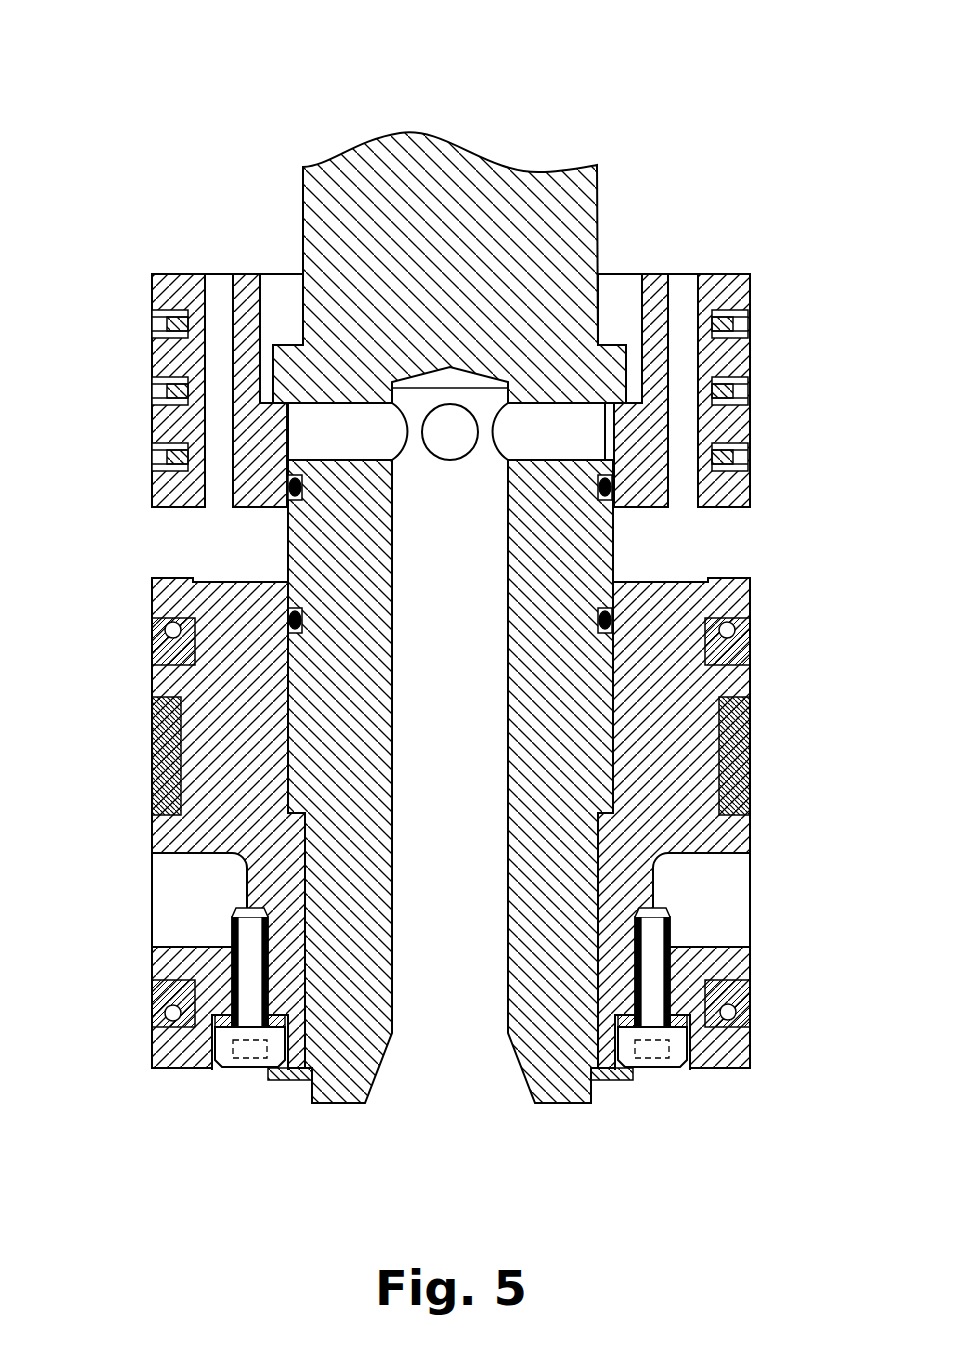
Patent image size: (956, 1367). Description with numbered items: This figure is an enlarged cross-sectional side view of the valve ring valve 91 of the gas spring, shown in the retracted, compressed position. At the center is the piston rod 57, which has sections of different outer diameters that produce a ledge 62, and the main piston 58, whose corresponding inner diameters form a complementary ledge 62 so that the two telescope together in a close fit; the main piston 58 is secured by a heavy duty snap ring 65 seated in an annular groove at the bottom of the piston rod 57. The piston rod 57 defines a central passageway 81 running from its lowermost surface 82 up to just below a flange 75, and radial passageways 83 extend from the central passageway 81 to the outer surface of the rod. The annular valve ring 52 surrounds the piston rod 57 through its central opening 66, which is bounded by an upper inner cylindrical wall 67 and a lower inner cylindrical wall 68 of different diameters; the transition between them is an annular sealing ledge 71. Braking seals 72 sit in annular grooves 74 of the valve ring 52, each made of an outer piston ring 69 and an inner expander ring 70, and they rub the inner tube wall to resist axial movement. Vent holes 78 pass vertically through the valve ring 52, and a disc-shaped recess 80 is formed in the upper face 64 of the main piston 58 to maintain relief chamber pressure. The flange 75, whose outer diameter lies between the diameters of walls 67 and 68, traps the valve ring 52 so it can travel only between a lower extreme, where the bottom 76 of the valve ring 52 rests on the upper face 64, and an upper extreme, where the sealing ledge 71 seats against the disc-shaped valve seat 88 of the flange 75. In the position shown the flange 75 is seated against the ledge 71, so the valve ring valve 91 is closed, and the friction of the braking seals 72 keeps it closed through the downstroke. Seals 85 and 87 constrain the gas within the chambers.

The valve ring valve 91 is at (205, 128).
The piston rod 57 is at (598, 200).
The central opening 66 is at (608, 292).
The upper inner cylindrical wall 67 is at (641, 293).
The vent holes 78 is at (223, 300).
The valve ring 52 is at (751, 280).
The braking seals 72 is at (748, 318).
The annular sealing ledge 71 is at (660, 360).
The annular grooves 74 is at (733, 470).
The main piston 58 is at (752, 685).
The ledge 62 is at (613, 820).
The lowermost surface 82 is at (578, 1105).
The central passageway 81 is at (432, 1000).
The snap ring 65 is at (295, 1082).
The seal 87 is at (153, 640).
The upper face of piston 64 is at (163, 580).
The disc-shaped recess 80 is at (236, 582).
The bottom of valve ring 76 is at (165, 508).
The valve seat 88 is at (270, 433).
The outer piston ring 69 is at (152, 330).
The inner expander ring 70 is at (180, 310).
The flange 75 is at (292, 357).
The seal 85 is at (288, 487).
The radial passageways 83 is at (355, 447).
The lower inner cylindrical wall 68 is at (608, 432).